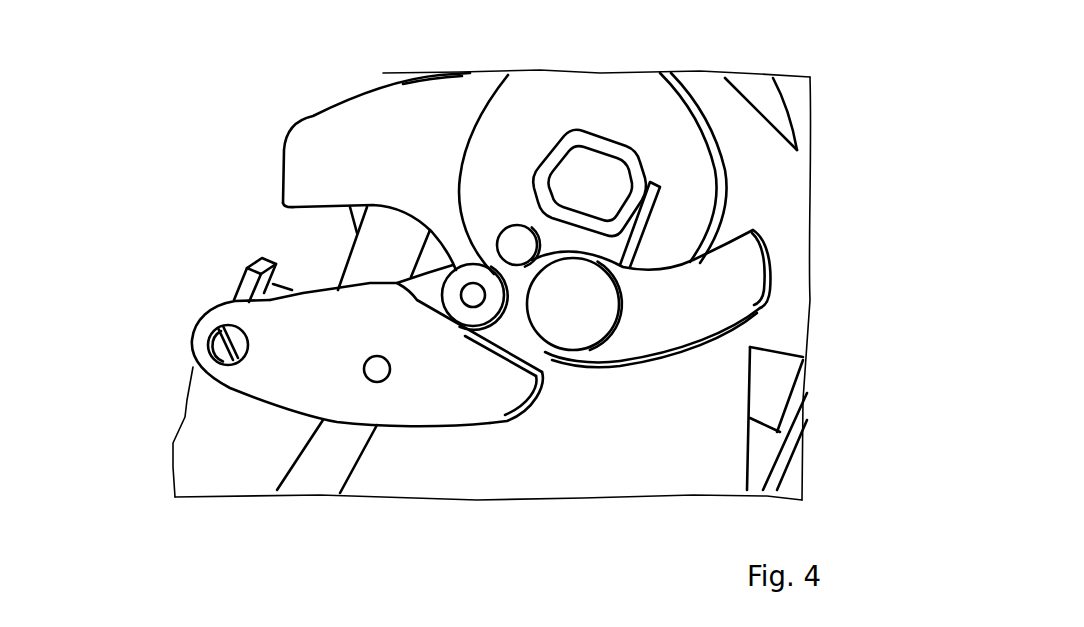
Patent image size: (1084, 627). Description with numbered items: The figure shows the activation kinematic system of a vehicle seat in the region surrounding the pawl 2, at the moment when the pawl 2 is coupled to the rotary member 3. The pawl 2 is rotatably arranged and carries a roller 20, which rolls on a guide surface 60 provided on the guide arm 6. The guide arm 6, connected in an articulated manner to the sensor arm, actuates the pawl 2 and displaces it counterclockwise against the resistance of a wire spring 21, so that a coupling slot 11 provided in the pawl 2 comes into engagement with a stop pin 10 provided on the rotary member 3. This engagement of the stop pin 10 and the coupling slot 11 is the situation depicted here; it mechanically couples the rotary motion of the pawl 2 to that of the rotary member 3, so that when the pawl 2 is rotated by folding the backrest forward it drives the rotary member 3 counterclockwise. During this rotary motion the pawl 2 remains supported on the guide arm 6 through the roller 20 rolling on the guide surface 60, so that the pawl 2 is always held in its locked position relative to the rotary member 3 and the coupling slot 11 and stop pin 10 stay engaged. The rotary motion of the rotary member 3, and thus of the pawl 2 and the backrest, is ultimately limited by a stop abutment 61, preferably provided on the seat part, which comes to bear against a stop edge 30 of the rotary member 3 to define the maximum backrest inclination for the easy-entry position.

The pawl 2 is at (727, 290).
The rotary member 3 is at (313, 148).
The guide arm 6 is at (317, 477).
The stop pin 10 is at (512, 245).
The coupling slot 11 is at (523, 270).
The roller 20 is at (460, 292).
The wire spring 21 is at (647, 212).
The stop edge 30 is at (317, 208).
The guide surface 60 is at (550, 363).
The stop abutment 61 is at (222, 282).